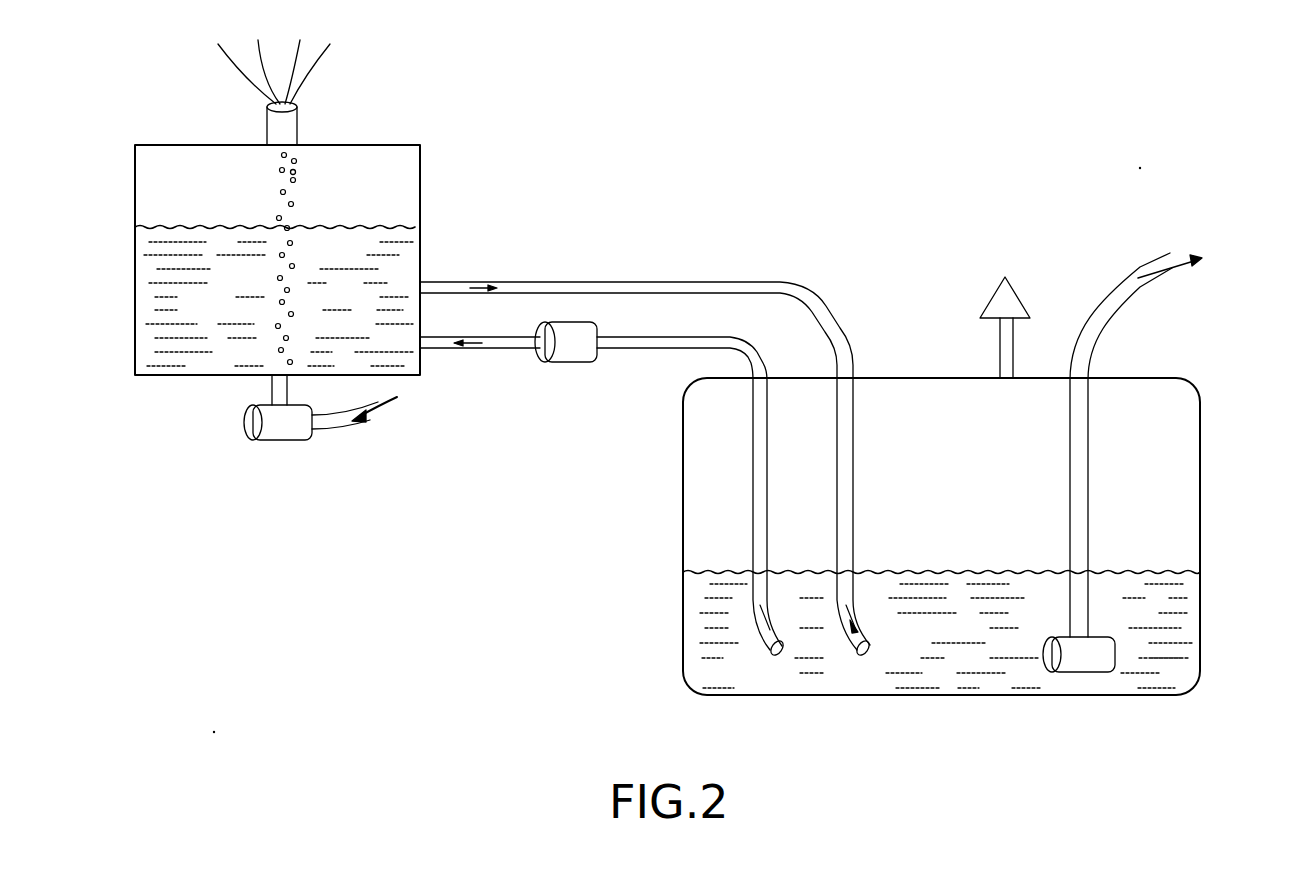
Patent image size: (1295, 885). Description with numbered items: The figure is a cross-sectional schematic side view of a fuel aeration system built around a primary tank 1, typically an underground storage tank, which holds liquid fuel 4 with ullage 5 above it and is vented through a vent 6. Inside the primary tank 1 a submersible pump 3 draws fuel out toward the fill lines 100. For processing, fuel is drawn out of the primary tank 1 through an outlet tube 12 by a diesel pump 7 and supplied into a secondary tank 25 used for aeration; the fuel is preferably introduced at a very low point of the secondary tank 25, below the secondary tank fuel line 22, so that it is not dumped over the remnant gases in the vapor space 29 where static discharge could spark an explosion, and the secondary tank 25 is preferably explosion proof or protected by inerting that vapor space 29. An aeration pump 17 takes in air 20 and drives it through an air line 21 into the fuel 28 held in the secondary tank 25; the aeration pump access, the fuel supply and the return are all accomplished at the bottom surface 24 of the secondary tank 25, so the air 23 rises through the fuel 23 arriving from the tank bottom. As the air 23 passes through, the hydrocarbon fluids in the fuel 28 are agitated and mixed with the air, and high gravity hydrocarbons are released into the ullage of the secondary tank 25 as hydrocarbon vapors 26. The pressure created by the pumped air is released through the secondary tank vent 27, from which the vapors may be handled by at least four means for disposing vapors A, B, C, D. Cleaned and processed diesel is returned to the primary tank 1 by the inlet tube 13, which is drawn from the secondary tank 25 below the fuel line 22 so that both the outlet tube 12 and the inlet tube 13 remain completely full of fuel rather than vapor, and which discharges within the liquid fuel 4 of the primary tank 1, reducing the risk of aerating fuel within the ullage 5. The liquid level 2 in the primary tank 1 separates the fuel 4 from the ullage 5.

The primary tank 1 is at (1218, 496).
The liquid surface 2 is at (1200, 573).
The submersible pump 3 is at (1086, 672).
The fuel 4 is at (975, 650).
The ullage 5 is at (982, 503).
The vent 6 is at (1020, 293).
The diesel pump 7 is at (553, 362).
The outlet tube 12 is at (672, 349).
The inlet tube 13 is at (664, 282).
The aeration pump 17 is at (248, 432).
The air 20 is at (377, 413).
The air line 21 is at (324, 432).
The secondary tank fuel line 22 is at (421, 226).
The air 23 is at (296, 296).
The bottom surface 24 is at (270, 381).
The secondary tank 25 is at (100, 238).
The hydrocarbon vapors 26 is at (297, 172).
The secondary tank vent 27 is at (268, 123).
The fuel 28 is at (220, 318).
The vapor space 29 is at (228, 198).
The fill lines 100 is at (1120, 278).
The means for disposing vapors A is at (237, 60).
The means for disposing vapors B is at (264, 53).
The means for disposing vapors C is at (297, 53).
The means for disposing vapors D is at (320, 60).